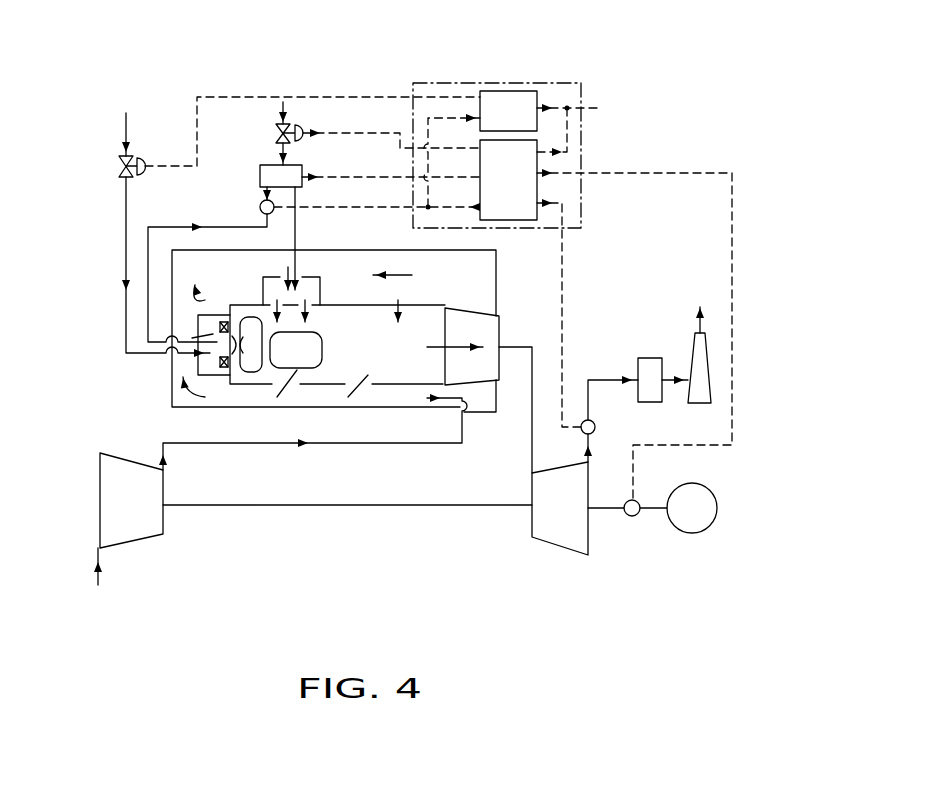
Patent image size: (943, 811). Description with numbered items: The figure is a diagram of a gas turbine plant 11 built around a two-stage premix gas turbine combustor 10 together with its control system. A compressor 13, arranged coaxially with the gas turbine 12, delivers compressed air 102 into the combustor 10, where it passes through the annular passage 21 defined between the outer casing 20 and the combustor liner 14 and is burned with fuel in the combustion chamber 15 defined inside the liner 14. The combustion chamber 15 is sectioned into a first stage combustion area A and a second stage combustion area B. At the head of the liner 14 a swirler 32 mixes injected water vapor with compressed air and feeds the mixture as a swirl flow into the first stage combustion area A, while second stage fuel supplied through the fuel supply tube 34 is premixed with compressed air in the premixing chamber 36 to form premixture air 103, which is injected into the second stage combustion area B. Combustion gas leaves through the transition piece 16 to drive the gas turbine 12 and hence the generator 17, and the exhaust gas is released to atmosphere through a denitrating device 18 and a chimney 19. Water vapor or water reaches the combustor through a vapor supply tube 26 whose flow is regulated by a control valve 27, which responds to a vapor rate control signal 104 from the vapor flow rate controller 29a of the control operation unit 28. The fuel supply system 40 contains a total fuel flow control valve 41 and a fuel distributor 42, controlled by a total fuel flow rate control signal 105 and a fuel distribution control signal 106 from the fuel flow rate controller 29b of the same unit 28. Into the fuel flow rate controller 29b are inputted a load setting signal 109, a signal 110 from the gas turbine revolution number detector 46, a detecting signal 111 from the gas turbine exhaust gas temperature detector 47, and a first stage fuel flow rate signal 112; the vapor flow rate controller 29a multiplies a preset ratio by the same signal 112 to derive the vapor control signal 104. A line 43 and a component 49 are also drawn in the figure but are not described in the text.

The gas turbine combustor 10 is at (498, 283).
The gas turbine plant 11 is at (518, 532).
The gas turbine 12 is at (548, 549).
The compressor 13 is at (147, 540).
The combustor liner 14 is at (425, 307).
The combustion chamber 15 is at (400, 359).
The transition piece 16 is at (468, 308).
The generator 17 is at (712, 492).
The denitrating device 18 is at (640, 358).
The chimney 19 is at (692, 352).
The outer casing 20 is at (370, 250).
The annular passage 21 is at (365, 400).
The vapor supply tube 26 is at (133, 356).
The control valve 27 is at (118, 159).
The control operation unit 28 is at (520, 82).
The vapor flow rate controller 29a is at (532, 123).
The fuel flow rate controller 29b is at (532, 195).
The swirler 32 is at (220, 325).
The fuel supply tube 34 is at (297, 228).
The premixing chamber 36 is at (352, 279).
The fuel supply system 40 is at (288, 123).
The total fuel flow control valve 41 is at (275, 133).
The fuel distributor 42 is at (262, 166).
The bypass line 43 is at (168, 227).
The gas turbine revolution number detector 46 is at (634, 518).
The gas turbine exhaust gas temperature detector 47 is at (597, 427).
The fuel flow sensor 49 is at (260, 205).
The compressed air 102 is at (196, 285).
The premixture air 103 is at (273, 306).
The vapor rate control signal 104 is at (366, 97).
The total fuel flow rate control signal 105 is at (372, 133).
The fuel distribution control signal 106 is at (368, 177).
The load setting signal 109 is at (603, 105).
The revolution number signal 110 is at (618, 173).
The exhaust gas temperature detecting signal 111 is at (565, 287).
The first stage fuel flow rate signal 112 is at (370, 208).
The first stage combustion area A is at (258, 354).
The second stage combustion area B is at (304, 364).